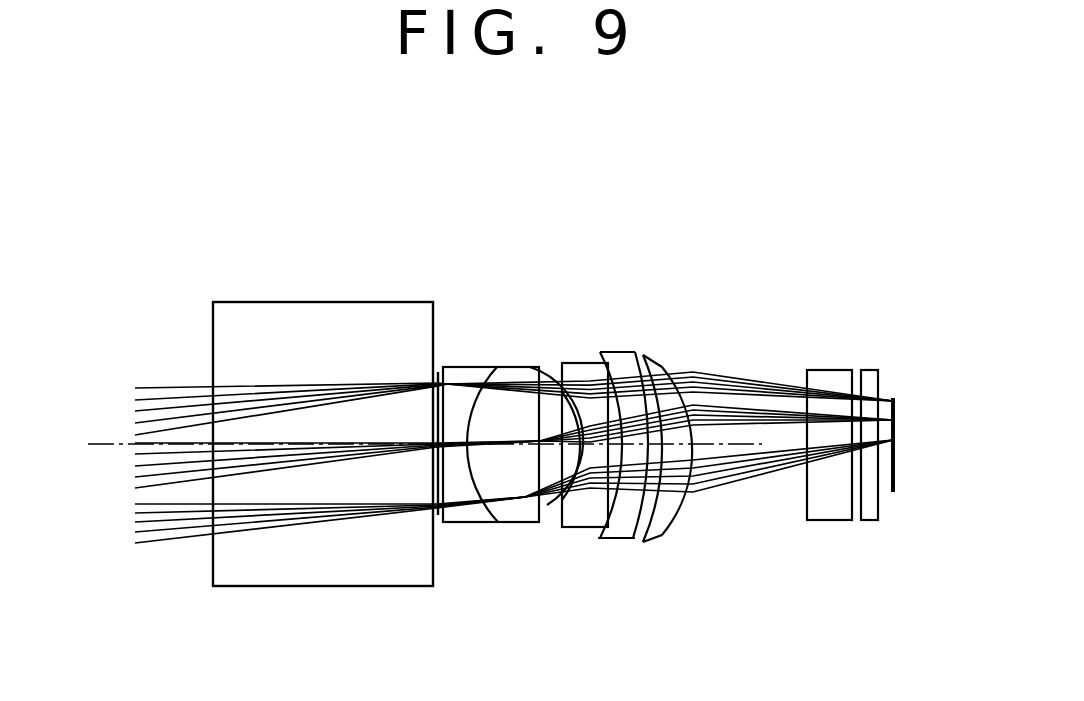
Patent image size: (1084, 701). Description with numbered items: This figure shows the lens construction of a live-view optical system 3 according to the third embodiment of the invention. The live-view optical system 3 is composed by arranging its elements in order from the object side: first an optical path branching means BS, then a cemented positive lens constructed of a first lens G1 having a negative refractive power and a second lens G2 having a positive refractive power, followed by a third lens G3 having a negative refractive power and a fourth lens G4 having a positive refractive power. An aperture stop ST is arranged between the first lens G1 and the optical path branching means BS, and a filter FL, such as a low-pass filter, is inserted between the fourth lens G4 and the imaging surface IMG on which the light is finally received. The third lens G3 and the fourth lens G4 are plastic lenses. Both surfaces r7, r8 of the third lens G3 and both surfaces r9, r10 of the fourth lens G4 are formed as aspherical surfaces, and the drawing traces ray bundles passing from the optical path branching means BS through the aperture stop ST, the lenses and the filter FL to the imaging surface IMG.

The live-view optical system 3 is at (586, 367).
The optical path branching means BS is at (293, 318).
The aperture stop ST is at (438, 372).
The first lens G1 is at (480, 370).
The second lens G2 is at (517, 370).
The third lens G3 is at (573, 372).
The fourth lens G4 is at (619, 434).
The filter FL is at (872, 378).
The imaging surface IMG is at (893, 483).
The surface of the third lens r7 is at (547, 505).
The surface of the third lens r8 is at (606, 535).
The surface of the fourth lens r9 is at (646, 520).
The surface of the fourth lens r10 is at (668, 497).